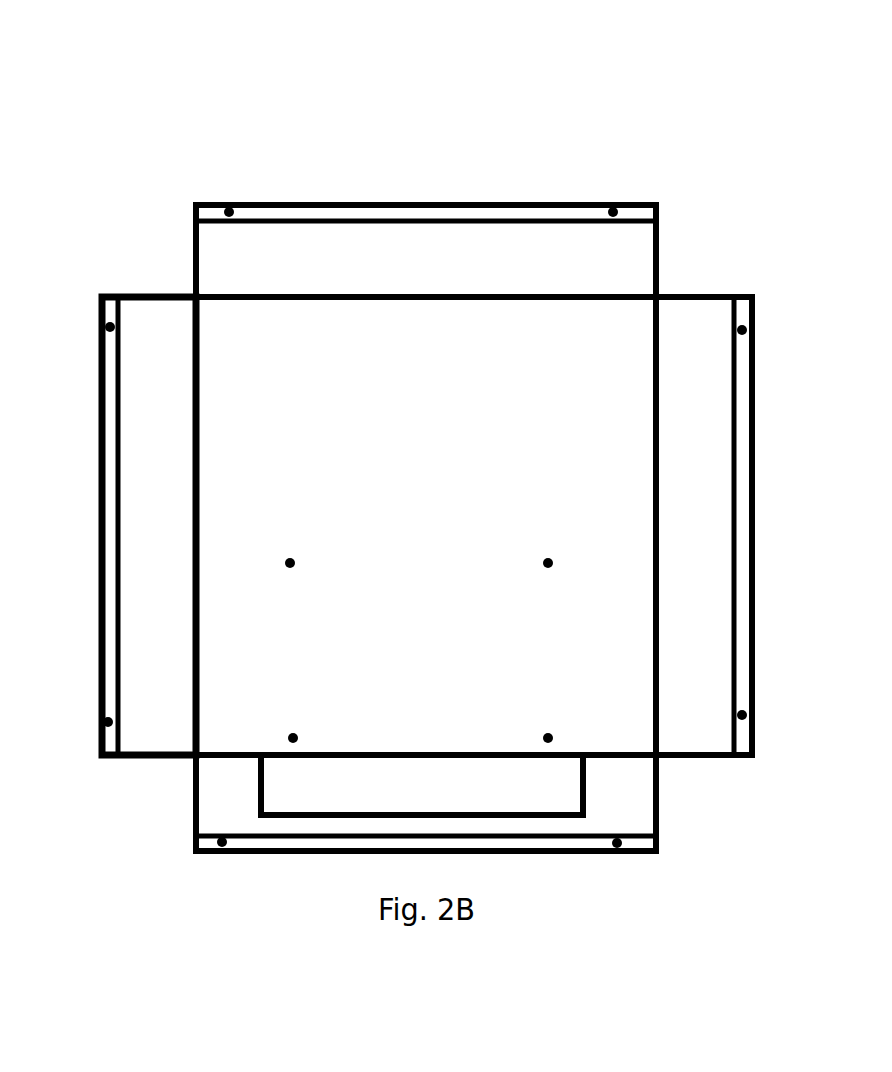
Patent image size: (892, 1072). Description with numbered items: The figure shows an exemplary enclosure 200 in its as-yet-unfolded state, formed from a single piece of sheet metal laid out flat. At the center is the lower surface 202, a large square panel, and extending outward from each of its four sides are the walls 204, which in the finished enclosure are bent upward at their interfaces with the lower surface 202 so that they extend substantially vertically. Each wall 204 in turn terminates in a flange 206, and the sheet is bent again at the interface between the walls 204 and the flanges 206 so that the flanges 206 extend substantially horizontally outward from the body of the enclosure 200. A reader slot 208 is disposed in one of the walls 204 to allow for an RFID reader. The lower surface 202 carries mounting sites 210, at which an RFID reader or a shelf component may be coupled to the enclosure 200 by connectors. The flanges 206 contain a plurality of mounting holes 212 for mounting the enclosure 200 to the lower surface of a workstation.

The enclosure 200 is at (384, 429).
The lower surface 202 is at (587, 410).
The walls 204 is at (472, 260).
The flanges 206 is at (345, 206).
The reader slot 208 is at (300, 798).
The mounting sites 210 is at (278, 566).
The mounting holes 212 is at (229, 207).